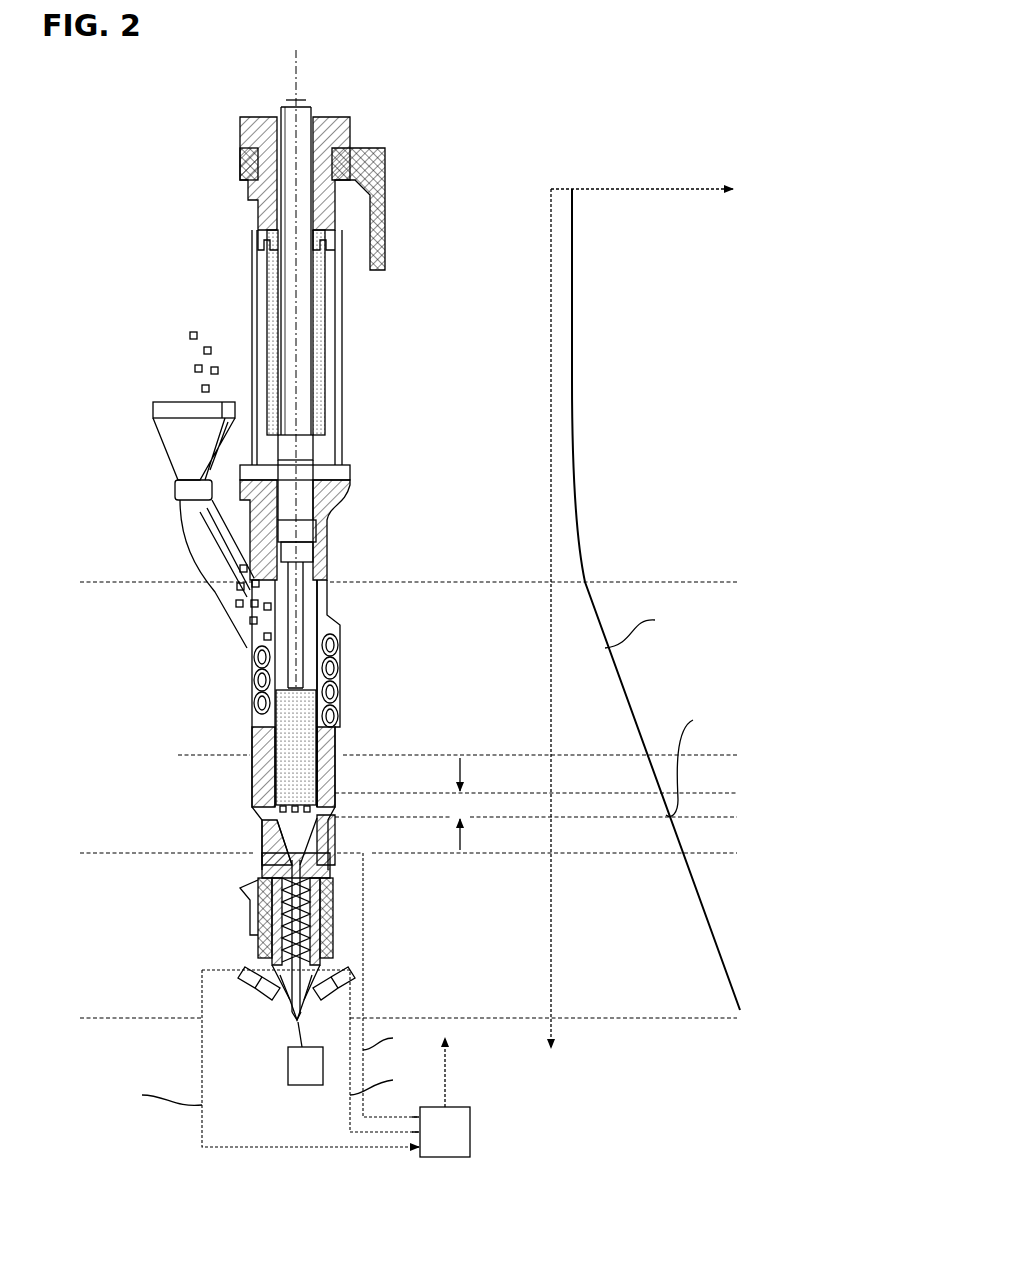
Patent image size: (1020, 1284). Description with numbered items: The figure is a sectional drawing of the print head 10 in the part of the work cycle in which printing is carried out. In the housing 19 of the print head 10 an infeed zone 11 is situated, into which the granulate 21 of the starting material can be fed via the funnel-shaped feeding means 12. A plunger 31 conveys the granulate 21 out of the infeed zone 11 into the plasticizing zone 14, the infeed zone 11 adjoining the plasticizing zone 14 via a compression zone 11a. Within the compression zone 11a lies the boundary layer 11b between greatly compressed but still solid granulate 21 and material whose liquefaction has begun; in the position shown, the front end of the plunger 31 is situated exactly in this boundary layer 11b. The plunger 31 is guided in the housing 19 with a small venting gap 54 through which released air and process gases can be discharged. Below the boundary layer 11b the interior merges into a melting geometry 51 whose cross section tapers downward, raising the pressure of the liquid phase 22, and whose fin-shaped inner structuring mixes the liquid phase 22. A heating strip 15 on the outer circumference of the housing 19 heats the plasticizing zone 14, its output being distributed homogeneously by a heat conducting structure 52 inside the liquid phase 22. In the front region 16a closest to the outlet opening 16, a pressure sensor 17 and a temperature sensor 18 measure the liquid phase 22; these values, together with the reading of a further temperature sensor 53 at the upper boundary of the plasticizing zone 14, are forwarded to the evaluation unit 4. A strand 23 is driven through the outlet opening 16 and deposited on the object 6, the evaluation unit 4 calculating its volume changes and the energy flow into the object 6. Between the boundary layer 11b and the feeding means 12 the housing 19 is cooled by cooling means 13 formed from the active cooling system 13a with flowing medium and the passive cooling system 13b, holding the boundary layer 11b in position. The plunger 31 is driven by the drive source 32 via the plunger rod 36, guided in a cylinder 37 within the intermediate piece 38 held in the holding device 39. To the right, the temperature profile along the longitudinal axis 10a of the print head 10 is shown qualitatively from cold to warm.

The print head 10 is at (190, 143).
The longitudinal axis 10a is at (297, 360).
The drive source 32 is at (296, 100).
The cylinder 37 is at (315, 120).
The holding device 39 is at (360, 148).
The plunger rod 36 is at (290, 215).
The intermediate piece 38 is at (342, 300).
The housing 19 is at (350, 490).
The granulate 21 is at (193, 355).
The funnel-shaped feeding means 12 is at (165, 432).
The infeed zone 11 is at (84, 582).
The compression zone 11a is at (84, 756).
The boundary layer 11b is at (483, 775).
The cooling means 13 is at (137, 720).
The active cooling system 13a is at (260, 682).
The passive cooling system 13b is at (250, 790).
The liquid phase 22 is at (276, 832).
The plunger 31 is at (308, 720).
The venting gap 54 is at (322, 742).
The further temperature sensor 53 is at (322, 850).
The melting geometry 51 is at (270, 867).
The heat conducting structure 52 is at (333, 893).
The heating strip 15 is at (258, 912).
The pressure sensor 17 is at (252, 970).
The temperature sensor 18 is at (337, 967).
The strand 23 is at (298, 1037).
The outlet opening 16 is at (297, 1023).
The front region 16a is at (290, 1017).
The object 6 is at (303, 1077).
The evaluation unit 4 is at (460, 1140).
The plasticizing zone 14 is at (84, 851).